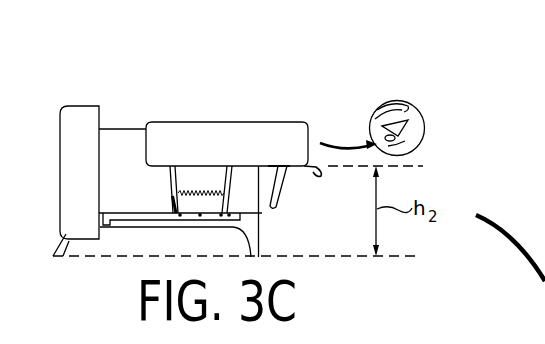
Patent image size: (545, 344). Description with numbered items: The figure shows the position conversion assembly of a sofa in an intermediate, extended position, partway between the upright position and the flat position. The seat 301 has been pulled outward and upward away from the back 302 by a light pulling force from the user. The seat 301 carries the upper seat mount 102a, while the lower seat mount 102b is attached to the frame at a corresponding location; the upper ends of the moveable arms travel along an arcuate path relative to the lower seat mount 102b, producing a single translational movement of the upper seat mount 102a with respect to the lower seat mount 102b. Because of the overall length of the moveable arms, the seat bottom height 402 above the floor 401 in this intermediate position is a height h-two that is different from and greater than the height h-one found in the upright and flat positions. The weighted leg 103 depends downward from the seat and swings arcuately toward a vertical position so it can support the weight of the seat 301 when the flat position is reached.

The back 302 is at (75, 117).
The seat 301 is at (285, 122).
The upper seat mount 102a is at (177, 181).
The lower seat mount 102b is at (223, 178).
The leg 103 is at (280, 192).
The seat bottom height 402 is at (423, 166).
The floor 401 is at (405, 256).